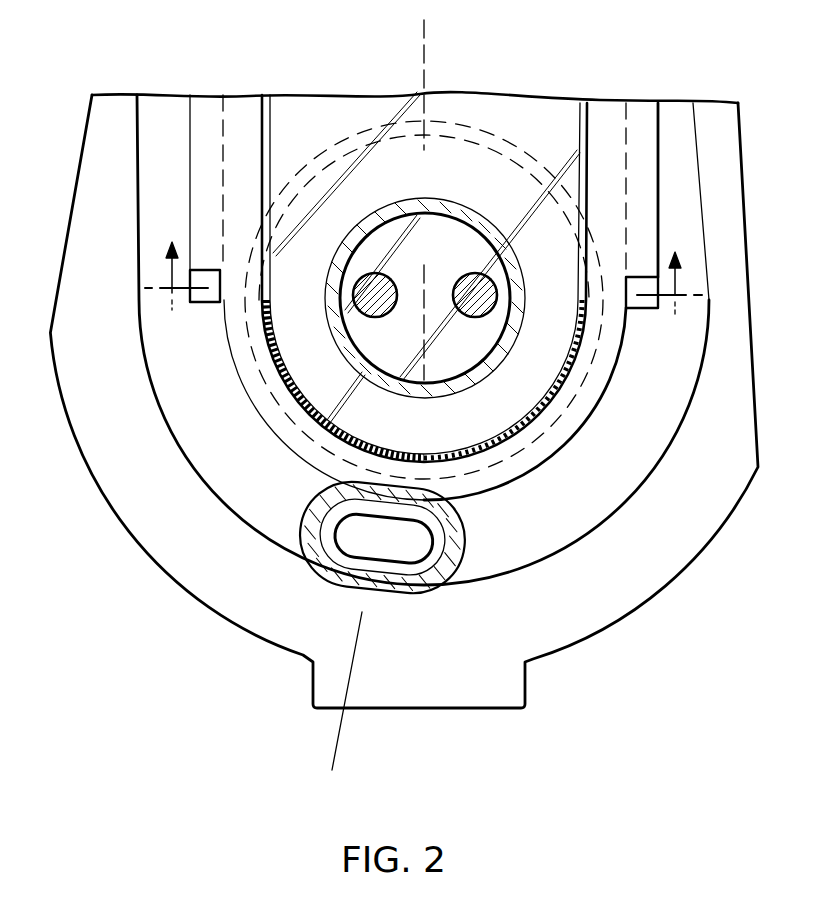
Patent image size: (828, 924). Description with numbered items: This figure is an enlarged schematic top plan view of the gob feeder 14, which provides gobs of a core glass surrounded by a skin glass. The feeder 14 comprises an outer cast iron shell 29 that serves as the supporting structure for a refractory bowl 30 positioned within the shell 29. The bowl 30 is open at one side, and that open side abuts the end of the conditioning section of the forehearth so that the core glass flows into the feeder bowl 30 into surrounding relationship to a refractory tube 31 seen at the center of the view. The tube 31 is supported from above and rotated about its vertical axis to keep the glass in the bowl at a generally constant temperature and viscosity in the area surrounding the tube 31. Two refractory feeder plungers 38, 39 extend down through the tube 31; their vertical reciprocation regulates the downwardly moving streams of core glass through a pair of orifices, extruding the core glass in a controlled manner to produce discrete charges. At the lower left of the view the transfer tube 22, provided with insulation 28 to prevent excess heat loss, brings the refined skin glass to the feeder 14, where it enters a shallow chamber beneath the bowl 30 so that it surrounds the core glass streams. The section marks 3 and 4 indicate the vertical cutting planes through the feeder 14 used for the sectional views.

The gob feeder 14 is at (705, 560).
The transfer tube 22 is at (322, 575).
The insulation 28 is at (300, 540).
The outer cast iron shell 29 is at (627, 598).
The refractory bowl 30 is at (243, 108).
The refractory tube 31 is at (452, 203).
The feeder plunger 38 is at (372, 296).
The feeder plunger 39 is at (478, 296).
The section line 3- 3 is at (465, 53).
The section line 4- 4 is at (423, 279).